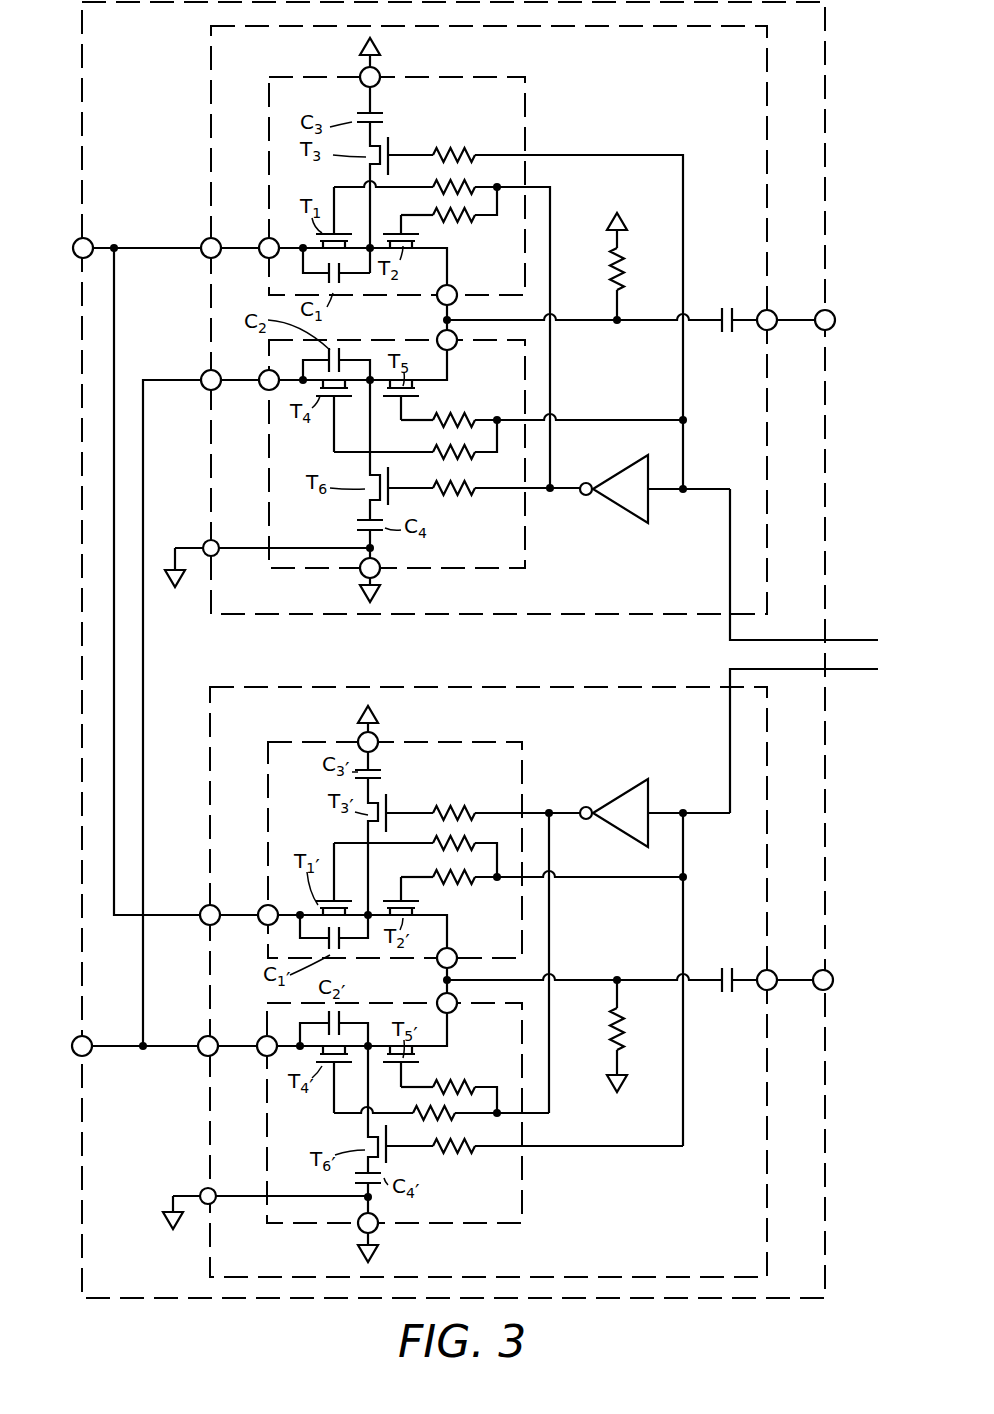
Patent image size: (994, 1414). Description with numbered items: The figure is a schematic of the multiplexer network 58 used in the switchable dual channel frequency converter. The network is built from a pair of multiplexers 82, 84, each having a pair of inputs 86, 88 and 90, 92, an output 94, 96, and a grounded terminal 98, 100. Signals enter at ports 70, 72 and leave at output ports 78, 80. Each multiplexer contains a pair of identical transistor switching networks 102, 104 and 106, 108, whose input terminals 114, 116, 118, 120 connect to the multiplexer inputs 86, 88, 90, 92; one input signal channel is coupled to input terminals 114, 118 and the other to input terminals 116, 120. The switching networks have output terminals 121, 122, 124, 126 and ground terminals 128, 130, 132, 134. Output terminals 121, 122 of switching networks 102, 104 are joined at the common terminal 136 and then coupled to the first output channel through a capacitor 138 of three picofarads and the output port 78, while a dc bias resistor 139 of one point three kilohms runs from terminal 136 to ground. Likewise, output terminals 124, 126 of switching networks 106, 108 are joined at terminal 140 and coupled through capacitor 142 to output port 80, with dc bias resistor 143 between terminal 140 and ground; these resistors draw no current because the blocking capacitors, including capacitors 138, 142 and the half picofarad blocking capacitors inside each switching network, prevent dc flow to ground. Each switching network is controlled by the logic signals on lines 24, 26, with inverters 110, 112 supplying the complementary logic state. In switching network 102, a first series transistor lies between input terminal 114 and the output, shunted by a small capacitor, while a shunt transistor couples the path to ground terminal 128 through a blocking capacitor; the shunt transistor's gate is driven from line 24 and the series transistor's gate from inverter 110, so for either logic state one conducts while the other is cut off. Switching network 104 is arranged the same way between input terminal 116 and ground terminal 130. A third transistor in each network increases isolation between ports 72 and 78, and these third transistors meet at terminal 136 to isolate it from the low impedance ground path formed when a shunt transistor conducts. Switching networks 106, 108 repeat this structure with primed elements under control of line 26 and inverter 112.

The line 24 is at (845, 640).
The line 26 is at (845, 670).
The multiplexer network 58 is at (80, 50).
The port 70 is at (76, 242).
The port 72 is at (75, 1040).
The output port 78 is at (832, 313).
The output port 80 is at (831, 973).
The multiplexer 82 is at (208, 64).
The multiplexer 84 is at (208, 720).
The input 86 is at (204, 242).
The input 88 is at (204, 374).
The input 90 is at (203, 910).
The input 92 is at (201, 1040).
The output 94 is at (760, 313).
The output 96 is at (760, 973).
The grounded terminal 98 is at (204, 543).
The grounded terminal 100 is at (201, 1192).
The transistor switching network 102 is at (527, 115).
The transistor switching network 104 is at (527, 535).
The transistor switching network 106 is at (524, 778).
The transistor switching network 108 is at (524, 1185).
The inverter 110 is at (618, 507).
The inverter 112 is at (620, 800).
The input terminal 114 is at (262, 242).
The input terminal 116 is at (262, 374).
The input terminal 118 is at (261, 910).
The input terminal 120 is at (260, 1040).
The output terminal 121 is at (452, 289).
The output terminal 122 is at (453, 347).
The output terminal 124 is at (453, 952).
The output terminal 126 is at (451, 1010).
The ground terminal 128 is at (379, 71).
The ground terminal 130 is at (379, 574).
The ground terminal 132 is at (360, 737).
The ground terminal 134 is at (378, 1232).
The terminal 136 is at (442, 320).
The capacitor 138 is at (731, 332).
The dc bias resistor 139 is at (612, 280).
The terminal 140 is at (442, 980).
The capacitor 142 is at (727, 992).
The dc bias resistor 143 is at (608, 1032).